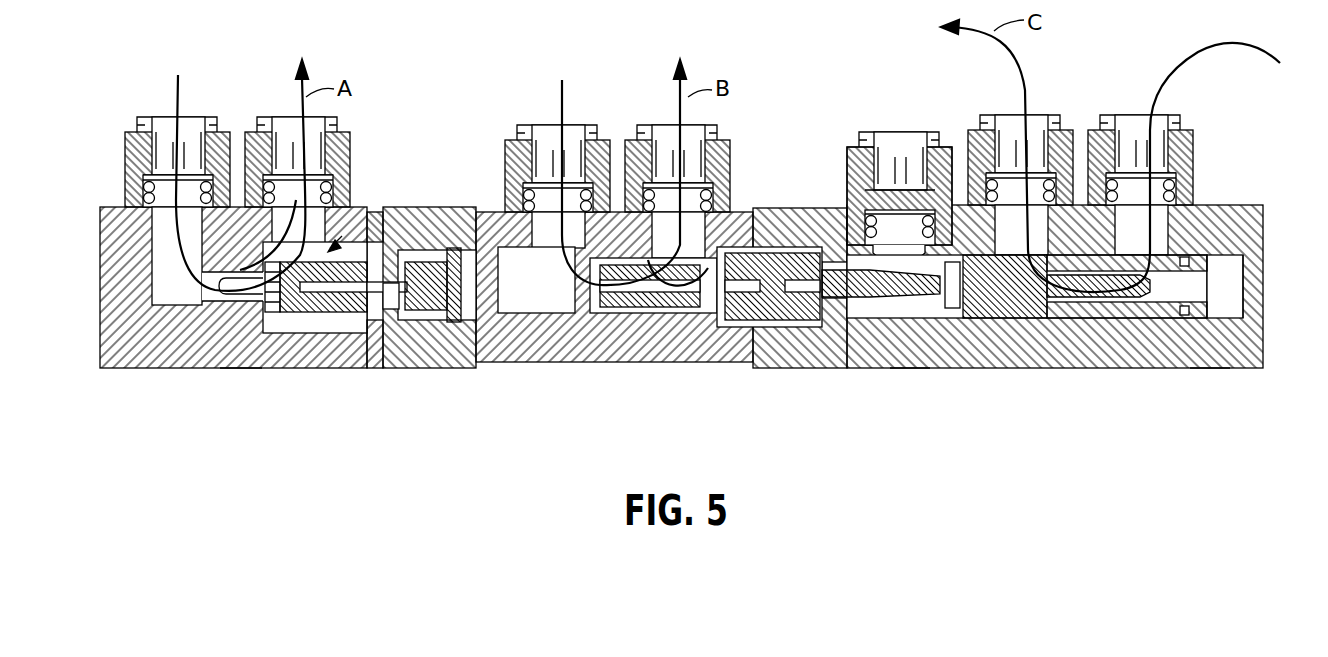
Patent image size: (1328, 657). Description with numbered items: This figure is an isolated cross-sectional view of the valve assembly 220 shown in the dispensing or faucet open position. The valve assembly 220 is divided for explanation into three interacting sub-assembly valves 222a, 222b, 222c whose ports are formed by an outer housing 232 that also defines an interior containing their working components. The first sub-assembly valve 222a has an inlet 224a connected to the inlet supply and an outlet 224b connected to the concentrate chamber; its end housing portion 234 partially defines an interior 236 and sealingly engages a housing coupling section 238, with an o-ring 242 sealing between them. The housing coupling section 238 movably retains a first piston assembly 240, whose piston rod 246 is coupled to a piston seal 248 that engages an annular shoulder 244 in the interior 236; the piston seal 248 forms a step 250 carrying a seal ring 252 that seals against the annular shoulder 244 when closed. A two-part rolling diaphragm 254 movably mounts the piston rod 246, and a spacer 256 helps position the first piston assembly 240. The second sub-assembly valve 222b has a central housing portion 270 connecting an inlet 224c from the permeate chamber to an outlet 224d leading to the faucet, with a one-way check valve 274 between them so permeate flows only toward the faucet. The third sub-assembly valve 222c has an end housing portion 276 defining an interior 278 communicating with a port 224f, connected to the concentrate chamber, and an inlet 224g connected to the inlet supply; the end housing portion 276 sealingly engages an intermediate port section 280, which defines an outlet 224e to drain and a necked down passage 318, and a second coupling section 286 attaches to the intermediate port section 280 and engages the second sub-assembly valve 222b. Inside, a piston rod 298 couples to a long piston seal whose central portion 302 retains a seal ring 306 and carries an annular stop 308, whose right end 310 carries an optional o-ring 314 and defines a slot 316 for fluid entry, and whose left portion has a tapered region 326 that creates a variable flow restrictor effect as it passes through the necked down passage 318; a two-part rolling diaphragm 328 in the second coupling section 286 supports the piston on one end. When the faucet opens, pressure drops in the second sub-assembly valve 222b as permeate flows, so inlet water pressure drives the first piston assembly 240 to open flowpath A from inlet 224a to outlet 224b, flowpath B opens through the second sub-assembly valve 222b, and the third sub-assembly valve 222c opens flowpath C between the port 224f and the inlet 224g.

The valve assembly 220 is at (163, 401).
The first sub-assembly valve 222a is at (118, 356).
The second sub-assembly valve 222b is at (690, 355).
The third sub-assembly valve 222c is at (1258, 362).
The inlet 224a is at (152, 116).
The outlet 224b is at (272, 116).
The inlet 224c is at (532, 122).
The outlet 224d is at (722, 128).
The outlet 224e is at (868, 140).
The port 224f is at (1055, 118).
The inlet 224g is at (1185, 119).
The outer housing 232 is at (902, 368).
The end housing portion 234 is at (240, 370).
The interior 236 is at (152, 268).
The housing coupling section 238 is at (418, 345).
The first piston assembly 240 is at (343, 232).
The o-ring 242 is at (372, 222).
The annular shoulder 244 is at (271, 345).
The piston rod 246 is at (470, 330).
The piston seal 248 is at (312, 302).
The step 250 is at (338, 248).
The seal ring 252 is at (278, 300).
The two-part rolling diaphragm 254 is at (380, 330).
The spacer 256 is at (400, 210).
The central housing portion 270 is at (555, 350).
The one-way check valve 274 is at (640, 330).
The end housing portion 276 is at (1255, 326).
The interior 278 is at (1243, 287).
The intermediate port section 280 is at (862, 355).
The second coupling section 286 is at (770, 365).
The piston rod 298 is at (780, 265).
The central portion 302 is at (990, 335).
The seal ring 306 is at (1068, 345).
The annular stop 308 is at (1038, 345).
The right end 310 is at (1232, 257).
The o-ring 314 is at (1205, 340).
The slot 316 is at (1130, 330).
The necked down passage 318 is at (935, 256).
The tapered region 326 is at (950, 320).
The two-part rolling diaphragm 328 is at (730, 258).